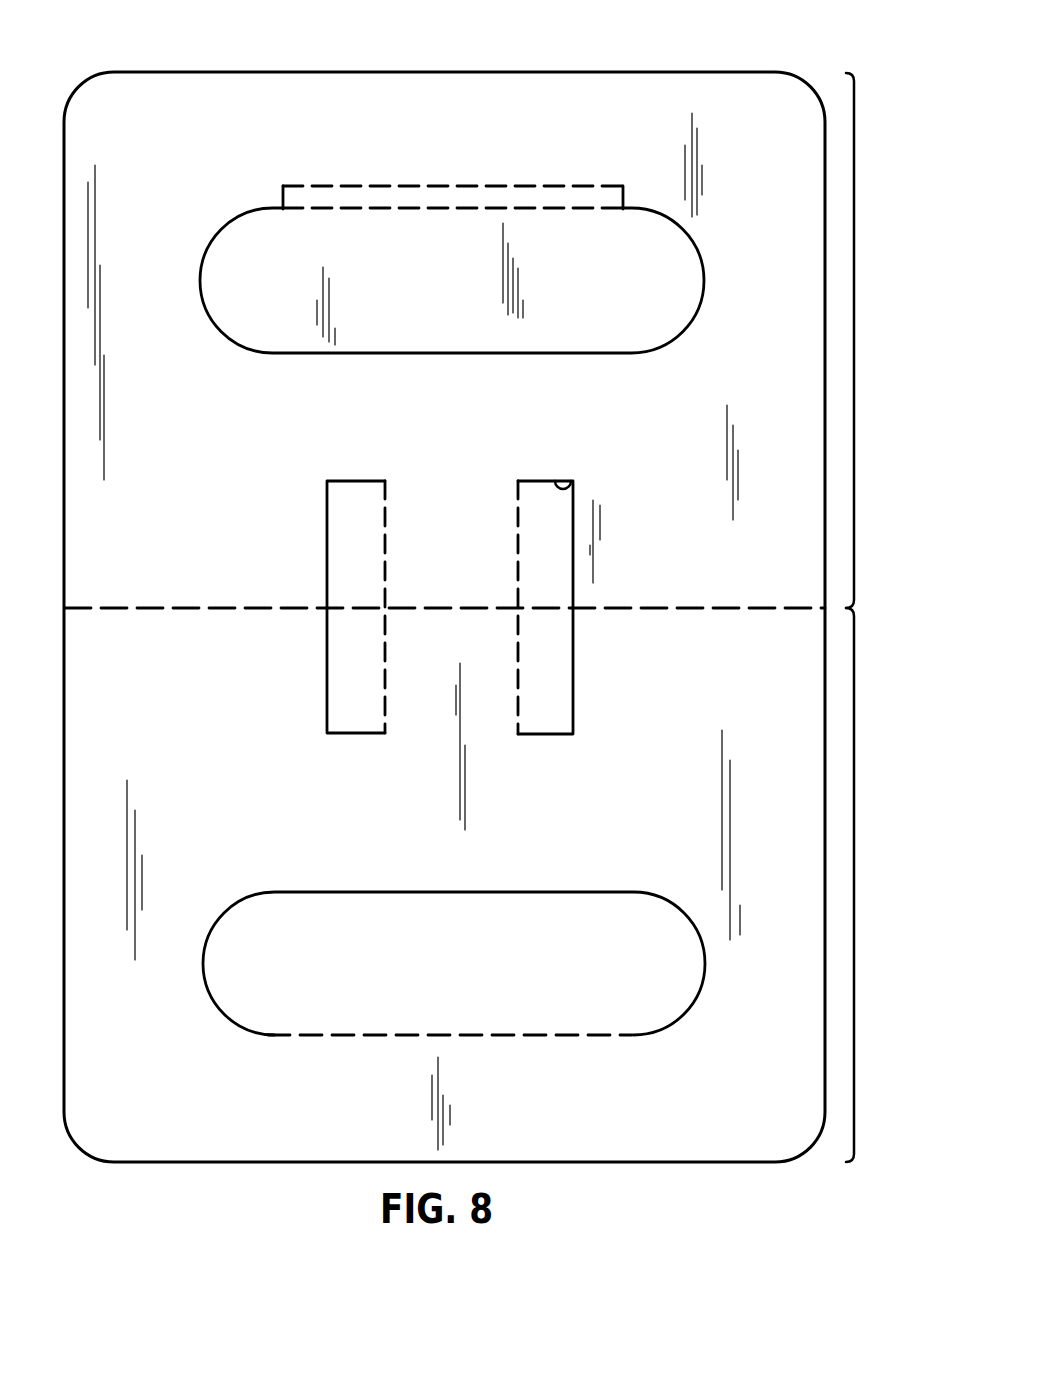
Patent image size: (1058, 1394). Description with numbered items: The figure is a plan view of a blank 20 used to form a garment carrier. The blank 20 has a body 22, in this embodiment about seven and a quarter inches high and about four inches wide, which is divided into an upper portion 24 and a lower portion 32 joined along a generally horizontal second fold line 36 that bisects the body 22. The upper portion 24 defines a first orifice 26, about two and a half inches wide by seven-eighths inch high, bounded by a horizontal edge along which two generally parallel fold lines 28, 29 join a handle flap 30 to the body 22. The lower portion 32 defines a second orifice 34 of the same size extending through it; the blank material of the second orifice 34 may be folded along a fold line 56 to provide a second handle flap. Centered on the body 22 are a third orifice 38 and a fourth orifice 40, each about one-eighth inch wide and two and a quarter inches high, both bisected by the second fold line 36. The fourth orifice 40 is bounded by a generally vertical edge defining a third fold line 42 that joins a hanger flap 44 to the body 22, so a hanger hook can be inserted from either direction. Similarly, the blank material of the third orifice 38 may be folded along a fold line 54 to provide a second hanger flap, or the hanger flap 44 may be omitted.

The blank 20 is at (610, 64).
The body 22 is at (218, 547).
The upper portion 24 is at (854, 362).
The first orifice 26 is at (697, 264).
The first fold line 28 is at (496, 210).
The second fold line 29 is at (394, 186).
The handle flap 30 is at (448, 294).
The lower portion 32 is at (854, 862).
The second orifice 34 is at (453, 965).
The second fold line 36 is at (677, 608).
The third orifice 38 is at (372, 647).
The fourth orifice 40 is at (571, 490).
The third fold line 42 is at (517, 508).
The hanger flap 44 is at (560, 582).
The fold line 54 is at (388, 553).
The fold line 56 is at (532, 1035).